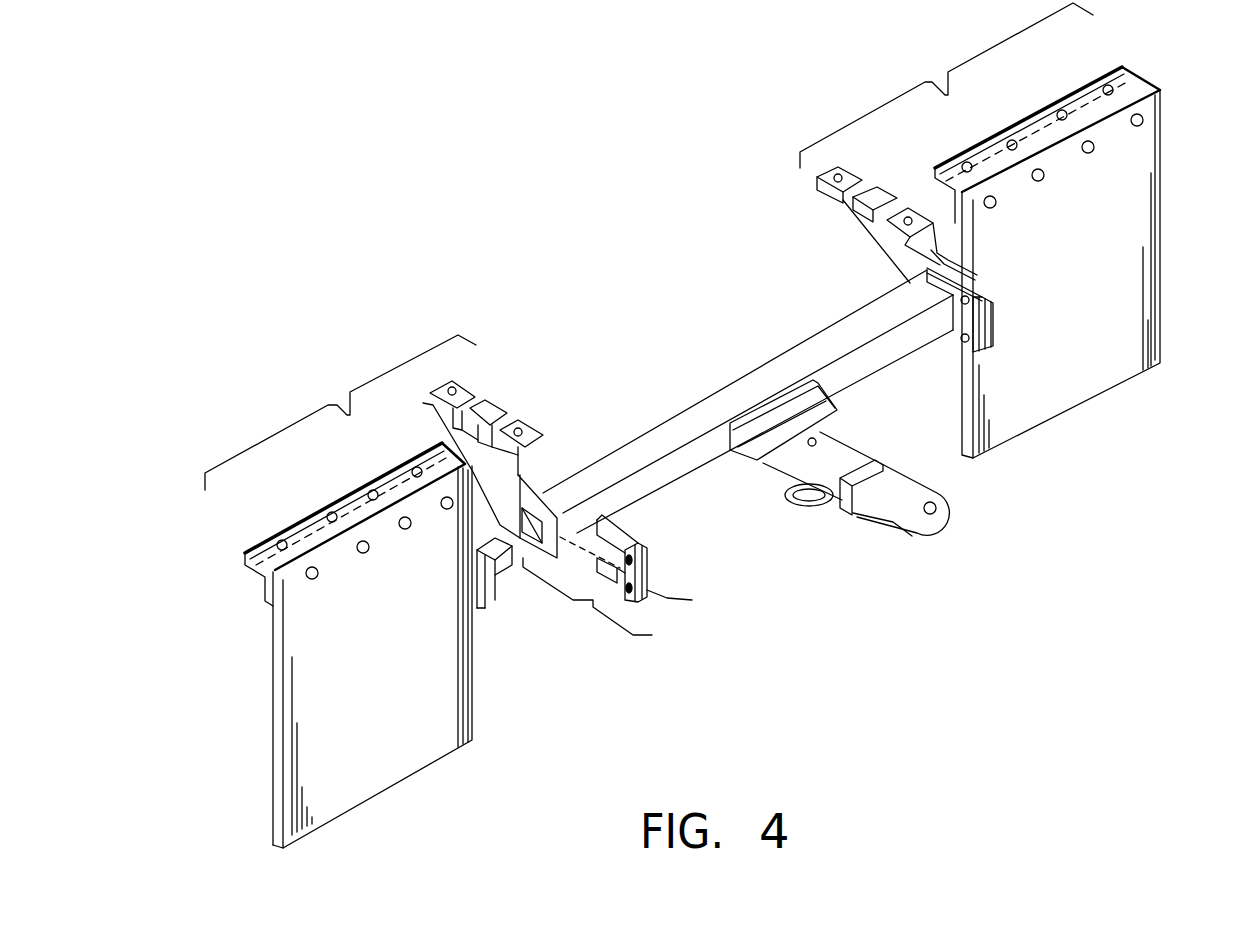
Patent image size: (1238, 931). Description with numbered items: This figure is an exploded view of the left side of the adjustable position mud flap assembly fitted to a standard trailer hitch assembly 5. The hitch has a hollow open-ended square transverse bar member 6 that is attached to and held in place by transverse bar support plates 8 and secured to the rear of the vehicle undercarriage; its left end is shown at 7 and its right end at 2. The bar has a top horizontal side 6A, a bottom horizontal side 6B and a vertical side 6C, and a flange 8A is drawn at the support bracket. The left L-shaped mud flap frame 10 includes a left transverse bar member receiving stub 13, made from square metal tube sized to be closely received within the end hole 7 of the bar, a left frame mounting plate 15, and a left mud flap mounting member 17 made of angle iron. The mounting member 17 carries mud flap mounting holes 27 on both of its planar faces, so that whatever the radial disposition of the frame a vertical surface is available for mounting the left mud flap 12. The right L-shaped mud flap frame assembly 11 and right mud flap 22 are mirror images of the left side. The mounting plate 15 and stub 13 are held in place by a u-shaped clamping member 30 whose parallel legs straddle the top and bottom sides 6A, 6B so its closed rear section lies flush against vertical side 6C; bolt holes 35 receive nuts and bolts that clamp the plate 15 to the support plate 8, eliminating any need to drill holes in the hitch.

The right end of transverse bar member 2 is at (993, 335).
The trailer hitch assembly 5 is at (760, 368).
The transverse bar member 6 is at (748, 401).
The top horizontal side 6A is at (652, 443).
The bottom horizontal side 6B is at (652, 493).
The vertical side 6C is at (703, 447).
The left end of transverse bar member 7 is at (527, 547).
The transverse bar support plate 8 is at (440, 412).
The bracket flange 8A is at (533, 488).
The left L-shaped mud flap frame 10 is at (340, 412).
The right L-shaped mud flap frame assembly 11 is at (946, 85).
The left mud flap 12 is at (357, 645).
The left transverse bar member receiving stub 13 is at (497, 563).
The left frame mounting plate 15 is at (493, 573).
The left mud flap mounting member 17 is at (343, 512).
The right mud flap 22 is at (1137, 233).
The mud flap mounting holes 27 is at (354, 524).
The u-shaped clamping member 30 is at (640, 542).
The bolt holes 35 is at (685, 611).